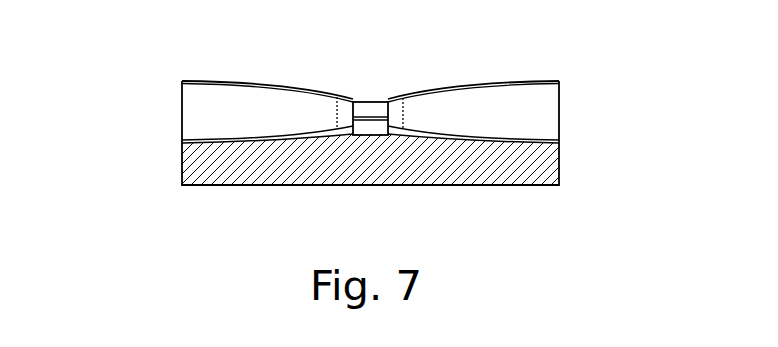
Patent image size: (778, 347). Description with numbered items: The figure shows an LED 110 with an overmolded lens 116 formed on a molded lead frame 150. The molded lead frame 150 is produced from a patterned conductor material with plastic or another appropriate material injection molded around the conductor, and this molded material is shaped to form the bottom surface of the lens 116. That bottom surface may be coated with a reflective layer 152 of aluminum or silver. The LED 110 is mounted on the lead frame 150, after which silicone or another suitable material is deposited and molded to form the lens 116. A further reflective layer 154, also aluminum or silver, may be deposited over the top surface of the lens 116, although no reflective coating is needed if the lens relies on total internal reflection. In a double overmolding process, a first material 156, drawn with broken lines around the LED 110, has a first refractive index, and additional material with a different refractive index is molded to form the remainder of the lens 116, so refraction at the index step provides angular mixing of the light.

The lens 116 is at (163, 95).
The molded lead frame 150 is at (559, 162).
The reflective layer 152 is at (540, 138).
The reflective layer 154 is at (473, 82).
The LED 110 is at (370, 100).
The first material 156 is at (337, 104).